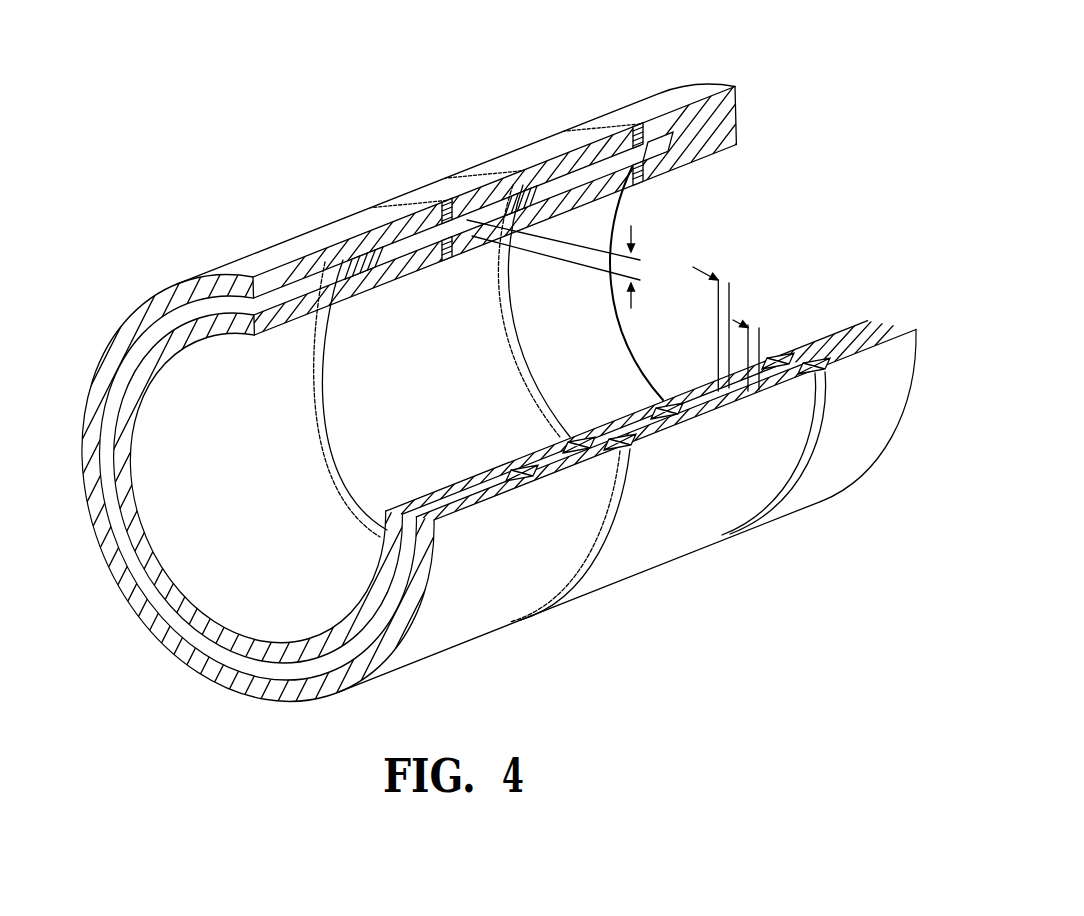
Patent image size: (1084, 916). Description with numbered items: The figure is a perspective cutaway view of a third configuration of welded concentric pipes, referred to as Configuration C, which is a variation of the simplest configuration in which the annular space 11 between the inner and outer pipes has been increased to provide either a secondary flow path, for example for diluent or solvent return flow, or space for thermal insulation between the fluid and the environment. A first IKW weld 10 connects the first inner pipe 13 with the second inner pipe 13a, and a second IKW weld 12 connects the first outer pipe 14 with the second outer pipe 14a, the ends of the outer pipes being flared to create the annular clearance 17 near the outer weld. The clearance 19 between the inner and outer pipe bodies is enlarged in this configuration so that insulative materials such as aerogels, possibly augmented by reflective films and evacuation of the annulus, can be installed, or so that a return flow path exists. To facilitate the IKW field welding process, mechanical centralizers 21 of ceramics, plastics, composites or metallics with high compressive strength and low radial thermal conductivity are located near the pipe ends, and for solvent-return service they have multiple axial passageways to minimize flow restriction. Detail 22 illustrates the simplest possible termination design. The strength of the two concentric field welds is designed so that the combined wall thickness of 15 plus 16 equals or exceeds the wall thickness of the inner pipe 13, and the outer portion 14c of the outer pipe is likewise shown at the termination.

The first IKW weld 10 is at (444, 258).
The annular space 11 is at (563, 184).
The second IKW weld 12 is at (448, 240).
The first inner pipe 13 is at (318, 313).
The second inner pipe 13a is at (618, 189).
The first outer pipe 14 is at (325, 260).
The second outer pipe 14a is at (562, 165).
The outer layer end portion 14c is at (660, 124).
The wall thickness 15 is at (731, 292).
The wall thickness 16 is at (761, 340).
The annular clearance 17 is at (634, 227).
The clearance 19 is at (631, 309).
The mechanical centralizers 21 is at (522, 190).
The termination detail 22 is at (692, 136).